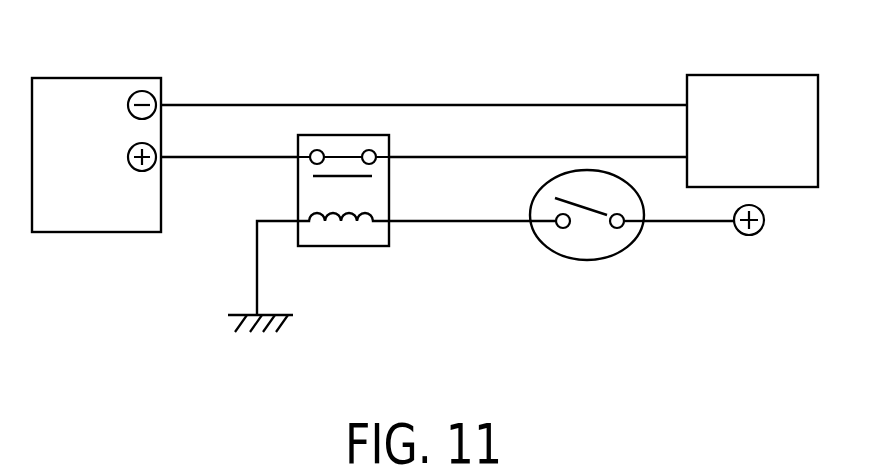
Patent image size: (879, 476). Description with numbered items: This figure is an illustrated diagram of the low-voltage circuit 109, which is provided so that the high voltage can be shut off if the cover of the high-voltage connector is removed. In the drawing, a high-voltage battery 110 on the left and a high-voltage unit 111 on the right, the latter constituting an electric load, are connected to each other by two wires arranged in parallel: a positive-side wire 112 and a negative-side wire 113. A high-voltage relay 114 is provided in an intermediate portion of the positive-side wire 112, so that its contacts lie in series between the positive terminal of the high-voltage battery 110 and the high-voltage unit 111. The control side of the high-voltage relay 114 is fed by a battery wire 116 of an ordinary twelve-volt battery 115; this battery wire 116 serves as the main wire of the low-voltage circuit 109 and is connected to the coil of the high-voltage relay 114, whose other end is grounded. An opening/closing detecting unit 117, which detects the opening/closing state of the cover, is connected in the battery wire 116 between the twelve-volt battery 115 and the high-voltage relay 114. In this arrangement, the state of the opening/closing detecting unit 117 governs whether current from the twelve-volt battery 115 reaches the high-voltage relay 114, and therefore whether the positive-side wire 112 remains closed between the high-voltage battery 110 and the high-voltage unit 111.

The low-voltage circuit 109 is at (604, 71).
The high-voltage battery 110 is at (99, 78).
The high-voltage unit 111 is at (798, 88).
The positive-side wire 112 is at (207, 160).
The negative-side wire 113 is at (232, 103).
The high-voltage relay 114 is at (363, 240).
The 12-V battery 115 is at (752, 235).
The battery wire 116 is at (488, 223).
The opening/closing detecting unit 117 is at (595, 261).